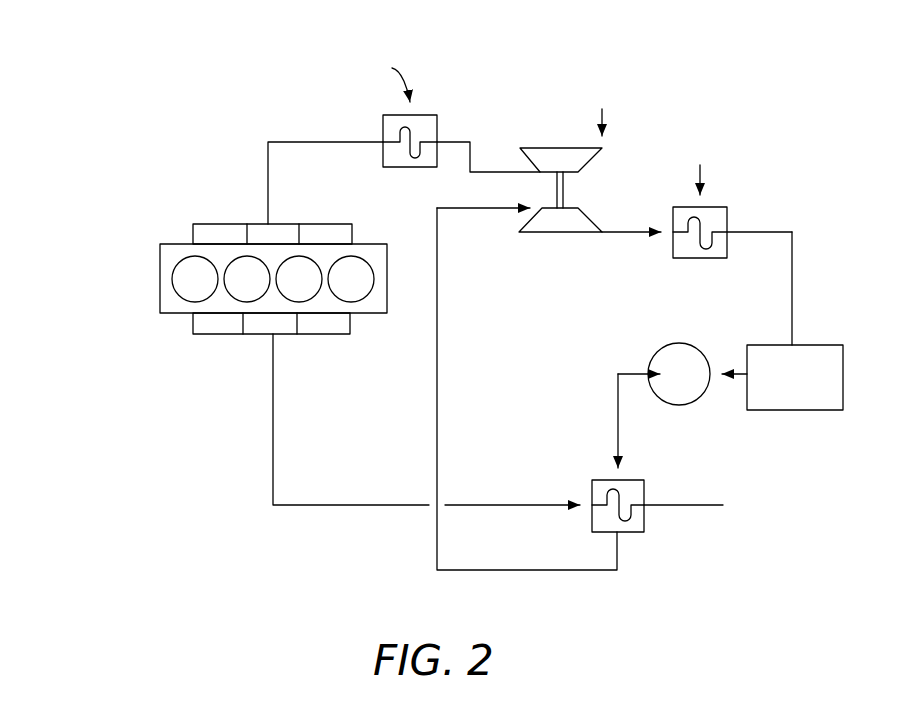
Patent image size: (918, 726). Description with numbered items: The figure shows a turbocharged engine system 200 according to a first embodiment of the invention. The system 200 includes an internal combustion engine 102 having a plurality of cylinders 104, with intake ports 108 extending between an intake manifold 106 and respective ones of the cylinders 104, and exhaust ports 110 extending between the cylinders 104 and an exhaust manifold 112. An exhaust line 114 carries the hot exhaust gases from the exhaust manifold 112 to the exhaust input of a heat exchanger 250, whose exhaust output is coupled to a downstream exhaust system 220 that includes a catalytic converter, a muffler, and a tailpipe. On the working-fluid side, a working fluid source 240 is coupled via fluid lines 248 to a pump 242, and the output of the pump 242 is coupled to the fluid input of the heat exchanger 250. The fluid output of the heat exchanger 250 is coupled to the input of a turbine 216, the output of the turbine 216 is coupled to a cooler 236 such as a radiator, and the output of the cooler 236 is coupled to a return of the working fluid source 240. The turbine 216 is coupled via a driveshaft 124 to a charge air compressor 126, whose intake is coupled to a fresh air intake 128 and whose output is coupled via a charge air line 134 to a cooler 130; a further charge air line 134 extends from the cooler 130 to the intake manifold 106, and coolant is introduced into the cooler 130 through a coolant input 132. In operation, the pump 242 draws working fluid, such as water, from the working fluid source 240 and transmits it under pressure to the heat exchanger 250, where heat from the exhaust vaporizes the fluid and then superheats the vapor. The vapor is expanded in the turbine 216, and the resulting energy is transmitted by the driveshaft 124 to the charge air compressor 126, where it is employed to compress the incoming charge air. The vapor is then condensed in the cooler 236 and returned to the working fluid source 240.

The turbocharged engine system 200 is at (322, 70).
The internal combustion engine 102 is at (98, 300).
The cylinders 104 is at (182, 282).
The intake manifold 106 is at (207, 223).
The intake ports 108 is at (252, 231).
The exhaust ports 110 is at (190, 330).
The exhaust manifold 112 is at (258, 337).
The exhaust line 114 is at (273, 454).
The driveshaft 124 is at (566, 190).
The charge air compressor 126 is at (562, 155).
The fresh air intake 128 is at (604, 120).
The cooler 130 is at (428, 122).
The coolant input 132 is at (383, 78).
The charge air line 134 is at (291, 141).
The turbine 216 is at (565, 222).
The downstream exhaust system 220 is at (672, 503).
The cooler 236 is at (716, 217).
The working fluid source 240 is at (829, 345).
The pump 242 is at (689, 346).
The fluid lines 248 is at (632, 370).
The heat exchanger 250 is at (650, 523).